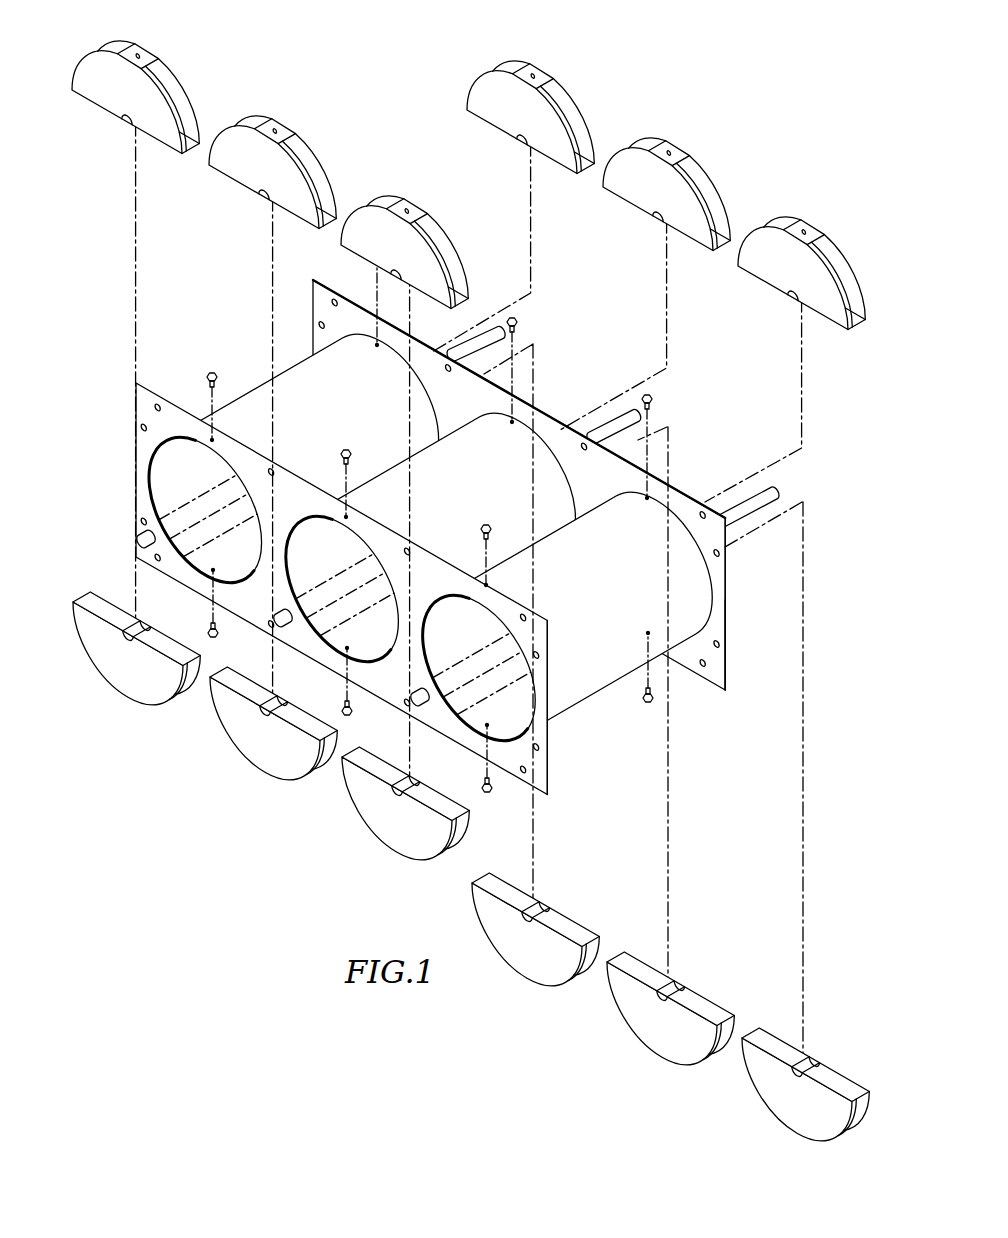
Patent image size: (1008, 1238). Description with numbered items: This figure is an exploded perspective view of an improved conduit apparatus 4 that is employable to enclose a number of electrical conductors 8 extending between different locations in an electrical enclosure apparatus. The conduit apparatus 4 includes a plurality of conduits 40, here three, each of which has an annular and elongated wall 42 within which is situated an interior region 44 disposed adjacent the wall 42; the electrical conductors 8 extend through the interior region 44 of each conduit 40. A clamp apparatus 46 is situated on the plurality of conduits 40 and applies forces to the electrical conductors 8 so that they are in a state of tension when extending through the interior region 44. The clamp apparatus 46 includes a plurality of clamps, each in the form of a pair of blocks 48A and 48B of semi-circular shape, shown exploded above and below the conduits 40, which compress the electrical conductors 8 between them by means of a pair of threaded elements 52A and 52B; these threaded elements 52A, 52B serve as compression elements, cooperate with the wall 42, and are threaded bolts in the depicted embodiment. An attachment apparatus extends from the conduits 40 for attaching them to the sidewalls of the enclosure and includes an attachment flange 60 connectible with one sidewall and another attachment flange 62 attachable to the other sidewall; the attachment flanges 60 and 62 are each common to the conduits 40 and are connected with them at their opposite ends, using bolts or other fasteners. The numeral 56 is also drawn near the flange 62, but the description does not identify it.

The conduit apparatus 4 is at (690, 82).
The electrical conductors 8 is at (482, 370).
The conduits 40 is at (430, 537).
The wall 42 is at (304, 347).
The interior region 44 is at (240, 556).
The clamp apparatus 46 is at (120, 712).
The block 48A is at (229, 716).
The block 48B is at (247, 120).
The threaded element 52A is at (650, 704).
The threaded element 52B is at (653, 400).
The second end of plate 56 is at (732, 592).
The attachment flange 60 is at (551, 764).
The attachment flange 62 is at (728, 615).